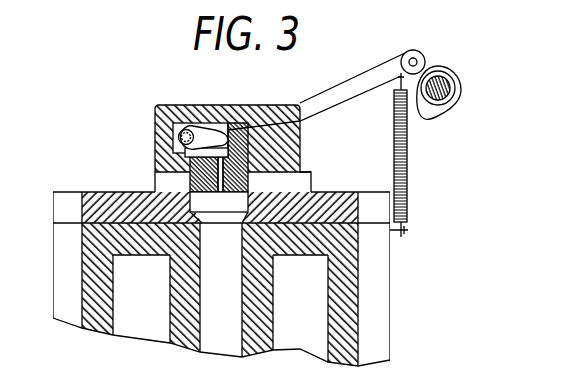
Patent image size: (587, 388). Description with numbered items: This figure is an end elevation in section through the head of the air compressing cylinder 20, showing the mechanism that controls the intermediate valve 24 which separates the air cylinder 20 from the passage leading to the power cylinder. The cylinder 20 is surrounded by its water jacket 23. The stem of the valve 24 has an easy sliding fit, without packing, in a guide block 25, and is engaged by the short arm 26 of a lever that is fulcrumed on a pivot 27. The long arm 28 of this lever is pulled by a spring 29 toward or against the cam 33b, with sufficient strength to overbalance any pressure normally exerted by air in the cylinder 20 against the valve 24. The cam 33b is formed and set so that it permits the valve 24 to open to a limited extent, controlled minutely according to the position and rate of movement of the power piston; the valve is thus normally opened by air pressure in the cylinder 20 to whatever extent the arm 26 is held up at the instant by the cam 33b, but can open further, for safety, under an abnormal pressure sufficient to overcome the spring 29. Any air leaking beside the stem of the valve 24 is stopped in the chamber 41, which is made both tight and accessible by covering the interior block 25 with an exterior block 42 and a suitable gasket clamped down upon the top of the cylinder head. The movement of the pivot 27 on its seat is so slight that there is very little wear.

The air compressing cylinder 20 is at (221, 301).
The water jacket 23 is at (141, 317).
The intermediate valve 24 is at (220, 213).
The guide block 25 is at (248, 160).
The short arm 26 is at (207, 133).
The pivot 27 is at (187, 129).
The long arm 28 is at (372, 80).
The spring 29 is at (410, 173).
The cam 33b is at (457, 102).
The chamber 41 is at (187, 150).
The exterior block 42 is at (247, 105).